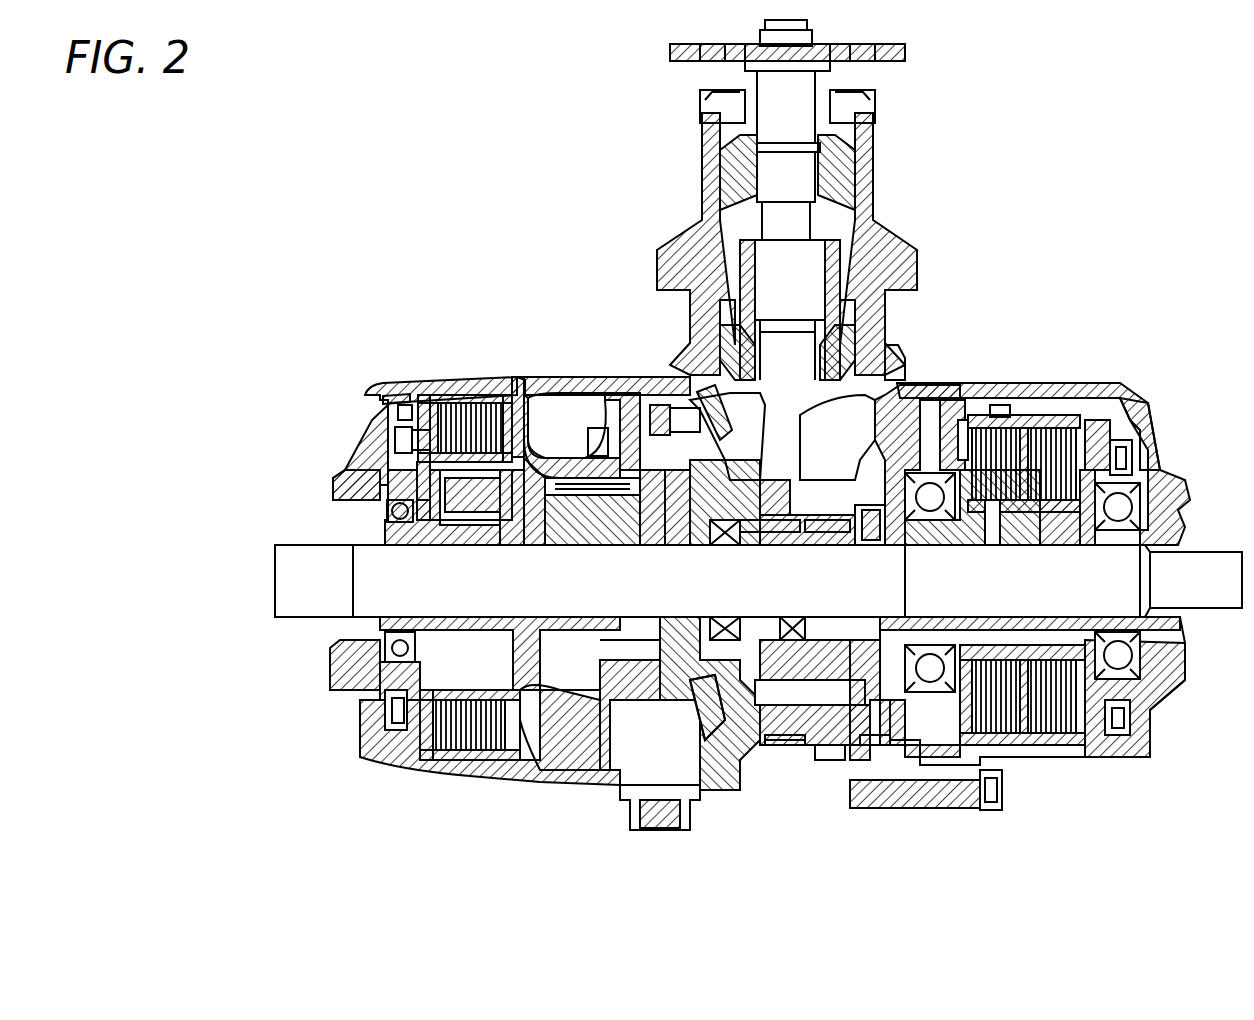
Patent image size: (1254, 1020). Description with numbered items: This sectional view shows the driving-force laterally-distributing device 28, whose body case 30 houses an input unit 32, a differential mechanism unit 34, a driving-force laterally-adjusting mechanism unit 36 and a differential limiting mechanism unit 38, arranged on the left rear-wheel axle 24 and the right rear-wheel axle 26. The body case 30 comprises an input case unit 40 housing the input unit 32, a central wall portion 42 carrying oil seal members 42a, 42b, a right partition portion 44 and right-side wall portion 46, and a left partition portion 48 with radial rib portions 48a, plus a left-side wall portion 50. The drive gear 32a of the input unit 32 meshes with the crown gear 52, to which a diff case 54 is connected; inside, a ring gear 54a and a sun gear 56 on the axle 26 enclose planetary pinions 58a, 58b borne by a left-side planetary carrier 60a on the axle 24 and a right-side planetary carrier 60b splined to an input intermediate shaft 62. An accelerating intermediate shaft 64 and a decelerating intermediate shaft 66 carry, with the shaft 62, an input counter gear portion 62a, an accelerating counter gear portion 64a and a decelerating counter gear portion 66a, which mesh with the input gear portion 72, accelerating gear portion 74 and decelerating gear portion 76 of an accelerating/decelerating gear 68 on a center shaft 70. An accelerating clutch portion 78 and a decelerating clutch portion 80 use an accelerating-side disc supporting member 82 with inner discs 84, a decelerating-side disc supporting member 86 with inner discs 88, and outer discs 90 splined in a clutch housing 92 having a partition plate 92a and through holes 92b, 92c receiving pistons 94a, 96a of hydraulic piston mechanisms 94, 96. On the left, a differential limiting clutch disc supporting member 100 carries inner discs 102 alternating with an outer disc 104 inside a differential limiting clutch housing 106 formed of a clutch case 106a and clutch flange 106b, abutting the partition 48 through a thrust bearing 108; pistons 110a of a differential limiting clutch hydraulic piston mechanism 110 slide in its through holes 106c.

The left rear-wheel axle 24 is at (288, 577).
The right rear-wheel axle 26 is at (1226, 560).
The driving-force laterally-distributing device 28 is at (1036, 205).
The body case 30 is at (963, 320).
The input unit 32 is at (850, 262).
The drive gear 32a is at (905, 375).
The differential mechanism unit 34 is at (605, 705).
The driving-force laterally-adjusting mechanism unit 36 is at (975, 820).
The differential limiting mechanism unit 38 is at (473, 760).
The input case unit 40 is at (692, 250).
The central wall portion 42 is at (742, 790).
The oil seal member 42a is at (730, 617).
The oil seal member 42b is at (795, 617).
The right partition portion 44 is at (926, 808).
The right-side wall portion 46 is at (1108, 760).
The left partition portion 48 is at (548, 770).
The rib portion 48a is at (568, 418).
The left-side wall portion 50 is at (398, 765).
The crown gear 52 is at (725, 404).
The diff case 54 is at (625, 440).
The ring gear 54a is at (602, 440).
The sun gear 56 is at (595, 548).
The planetary pinion 58a is at (645, 548).
The planetary pinion 58b is at (582, 548).
The left-side planetary carrier 60a is at (530, 548).
The right-side planetary carrier 60b is at (670, 548).
The input intermediate shaft 62 is at (750, 548).
The input counter gear portion 62a is at (778, 516).
The accelerating intermediate shaft 64 is at (836, 548).
The accelerating counter gear portion 64a is at (822, 515).
The decelerating intermediate shaft 66 is at (910, 548).
The decelerating counter gear portion 66a is at (880, 548).
The accelerating/decelerating gear 68 is at (806, 745).
The center shaft 70 is at (768, 700).
The input gear portion 72 is at (782, 745).
The accelerating gear portion 74 is at (832, 762).
The decelerating gear portion 76 is at (872, 745).
The accelerating clutch portion 78 is at (1058, 748).
The decelerating clutch portion 80 is at (1003, 748).
The accelerating-side disc supporting member 82 is at (1052, 548).
The accelerating-side inner disc 84 is at (1082, 548).
The decelerating-side disc supporting member 86 is at (1008, 548).
The decelerating-side inner disc 88 is at (985, 548).
The outer disc 90 is at (1012, 428).
The clutch housing 92 is at (1040, 418).
The partition plate 92a is at (1040, 428).
The through hole 92b is at (1135, 460).
The through hole 92c is at (998, 405).
The hydraulic piston mechanism 94 is at (1150, 432).
The piston 94a is at (1100, 420).
The hydraulic piston mechanism 96 is at (948, 400).
The piston 96a is at (962, 420).
The differential limiting clutch disc supporting member 100 is at (450, 545).
The differential limiting clutch inner disc 102 is at (415, 545).
The differential limiting clutch outer disc 104 is at (466, 403).
The differential limiting clutch housing 106 is at (418, 400).
The clutch case 106a is at (437, 403).
The clutch flange 106b is at (338, 498).
The through hole 106c is at (395, 438).
The thrust bearing 108 is at (516, 377).
The differential limiting clutch hydraulic piston mechanism 110 is at (348, 412).
The piston 110a is at (380, 398).